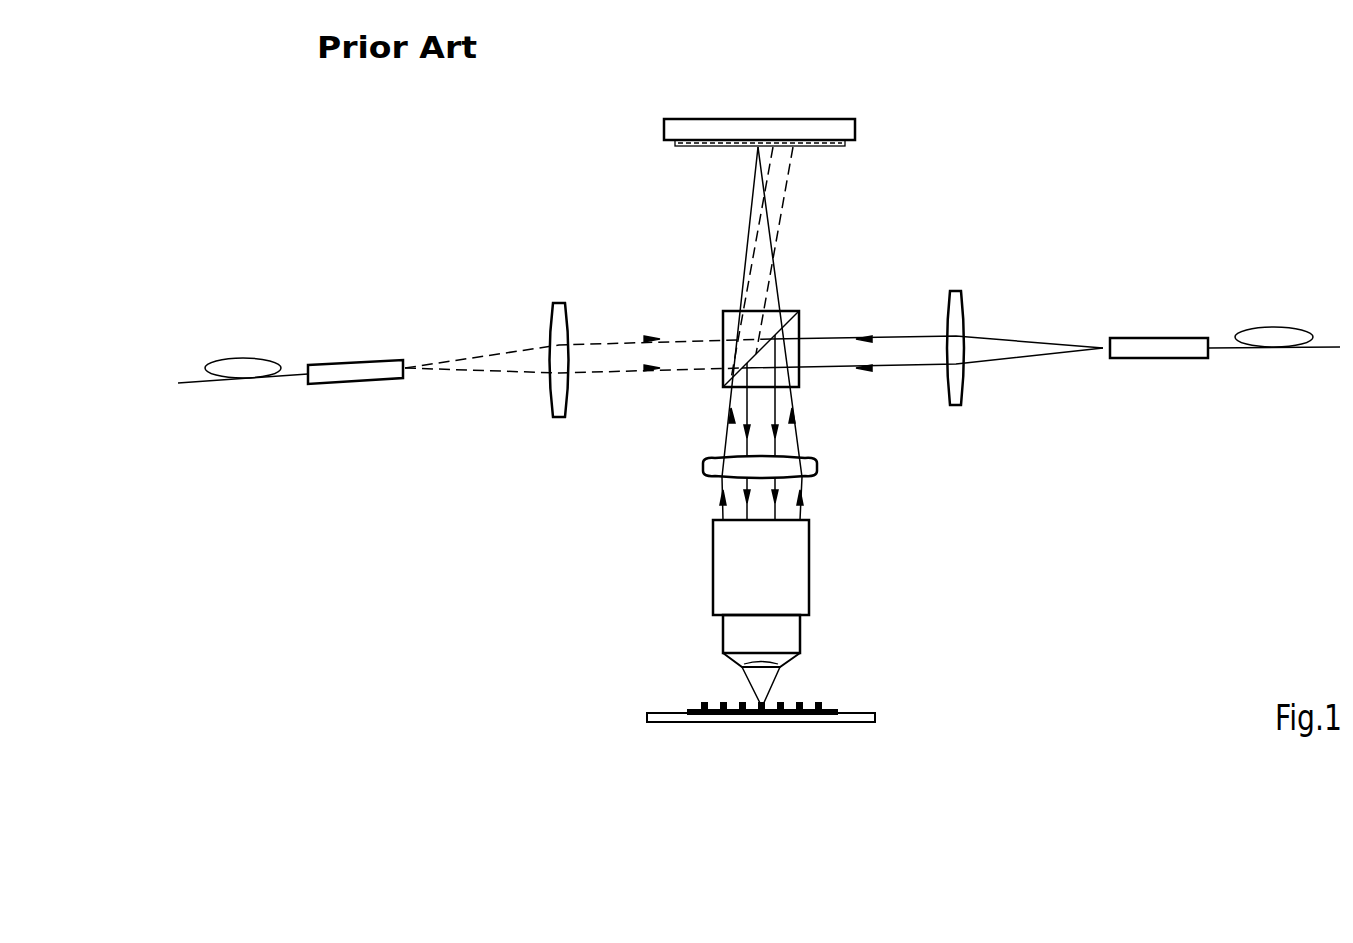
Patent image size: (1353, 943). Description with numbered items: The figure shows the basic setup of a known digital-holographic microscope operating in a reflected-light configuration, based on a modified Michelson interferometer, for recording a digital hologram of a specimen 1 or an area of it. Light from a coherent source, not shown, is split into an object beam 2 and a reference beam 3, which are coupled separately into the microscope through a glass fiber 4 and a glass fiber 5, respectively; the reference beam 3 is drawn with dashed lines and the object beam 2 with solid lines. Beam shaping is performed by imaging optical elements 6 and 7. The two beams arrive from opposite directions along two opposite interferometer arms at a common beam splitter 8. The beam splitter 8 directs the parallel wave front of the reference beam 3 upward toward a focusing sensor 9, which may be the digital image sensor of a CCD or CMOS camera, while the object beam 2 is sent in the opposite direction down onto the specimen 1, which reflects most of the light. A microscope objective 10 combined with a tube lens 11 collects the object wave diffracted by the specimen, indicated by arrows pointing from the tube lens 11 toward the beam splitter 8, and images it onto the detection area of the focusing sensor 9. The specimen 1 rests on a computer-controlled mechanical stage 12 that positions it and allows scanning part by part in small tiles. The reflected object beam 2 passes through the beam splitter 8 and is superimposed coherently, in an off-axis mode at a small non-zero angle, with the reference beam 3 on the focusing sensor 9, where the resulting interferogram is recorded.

The specimen 1 is at (825, 704).
The object beam 2 is at (1032, 338).
The reference beam 3 is at (487, 353).
The glass fiber 4 is at (1160, 338).
The glass fiber 5 is at (340, 363).
The imaging optical element 6 is at (963, 305).
The imaging optical element 7 is at (565, 317).
The beam splitter 8 is at (799, 311).
The focusing sensor 9 is at (855, 131).
The microscope objective 10 is at (809, 574).
The tube lens 11 is at (820, 468).
The mechanical stage 12 is at (660, 712).